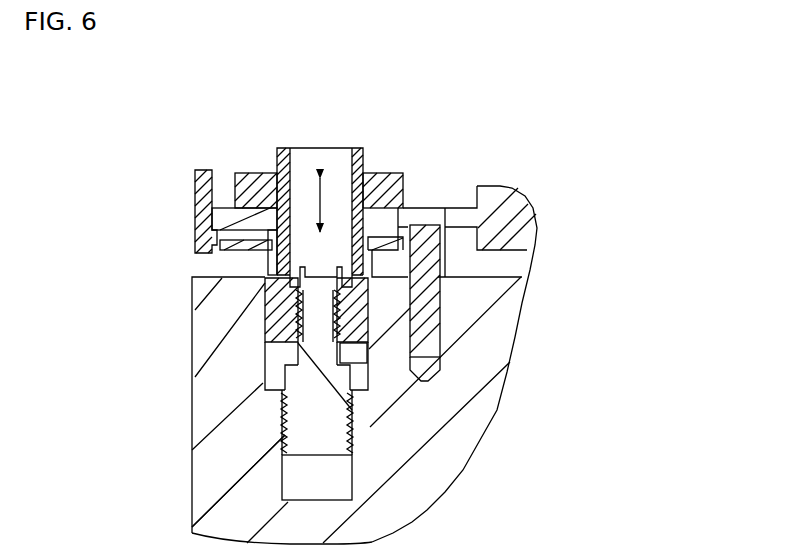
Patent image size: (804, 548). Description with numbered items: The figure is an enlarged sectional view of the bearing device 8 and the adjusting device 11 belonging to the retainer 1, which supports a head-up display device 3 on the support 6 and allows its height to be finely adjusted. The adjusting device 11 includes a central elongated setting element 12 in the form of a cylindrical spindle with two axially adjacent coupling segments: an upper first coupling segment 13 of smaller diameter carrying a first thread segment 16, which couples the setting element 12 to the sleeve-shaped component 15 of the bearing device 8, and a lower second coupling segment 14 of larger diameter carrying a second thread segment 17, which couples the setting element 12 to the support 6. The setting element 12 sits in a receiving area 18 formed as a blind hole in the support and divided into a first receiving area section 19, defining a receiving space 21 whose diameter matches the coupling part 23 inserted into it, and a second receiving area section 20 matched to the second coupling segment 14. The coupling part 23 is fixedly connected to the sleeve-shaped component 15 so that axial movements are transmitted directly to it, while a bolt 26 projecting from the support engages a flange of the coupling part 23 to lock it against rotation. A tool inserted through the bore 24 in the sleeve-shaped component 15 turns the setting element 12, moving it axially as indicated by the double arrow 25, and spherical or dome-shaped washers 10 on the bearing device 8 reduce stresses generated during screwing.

The retainer 1 is at (485, 102).
The display device 3 is at (203, 210).
The support 6 is at (192, 390).
The bearing device 8 is at (262, 122).
The spherical or dome-shaped washer 10 is at (242, 202).
The adjusting device 11 is at (189, 263).
The setting element 12 is at (354, 475).
The first coupling segment 13 is at (320, 325).
The second coupling segment 14 is at (315, 404).
The sleeve-shaped component 15 is at (362, 162).
The first thread segment 16 is at (297, 300).
The second thread segment 17 is at (355, 427).
The receiving area 18 is at (368, 373).
The first receiving area section 19 is at (265, 362).
The second receiving area section 20 is at (280, 478).
The receiving space 21 is at (363, 361).
The coupling part 23 is at (275, 270).
The bore 24 is at (322, 148).
The double arrow 25 is at (324, 200).
The bolt 26 is at (425, 308).